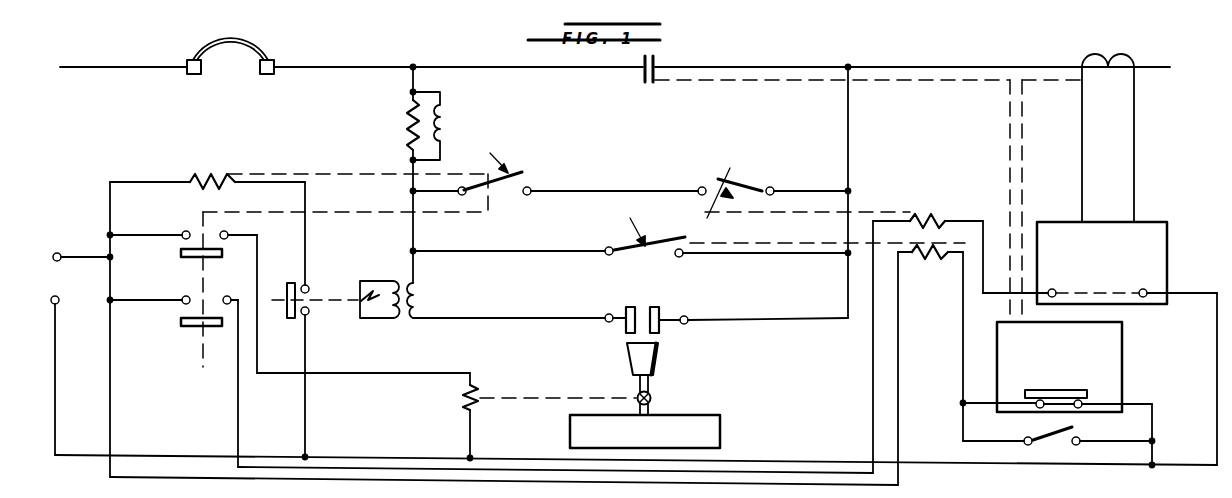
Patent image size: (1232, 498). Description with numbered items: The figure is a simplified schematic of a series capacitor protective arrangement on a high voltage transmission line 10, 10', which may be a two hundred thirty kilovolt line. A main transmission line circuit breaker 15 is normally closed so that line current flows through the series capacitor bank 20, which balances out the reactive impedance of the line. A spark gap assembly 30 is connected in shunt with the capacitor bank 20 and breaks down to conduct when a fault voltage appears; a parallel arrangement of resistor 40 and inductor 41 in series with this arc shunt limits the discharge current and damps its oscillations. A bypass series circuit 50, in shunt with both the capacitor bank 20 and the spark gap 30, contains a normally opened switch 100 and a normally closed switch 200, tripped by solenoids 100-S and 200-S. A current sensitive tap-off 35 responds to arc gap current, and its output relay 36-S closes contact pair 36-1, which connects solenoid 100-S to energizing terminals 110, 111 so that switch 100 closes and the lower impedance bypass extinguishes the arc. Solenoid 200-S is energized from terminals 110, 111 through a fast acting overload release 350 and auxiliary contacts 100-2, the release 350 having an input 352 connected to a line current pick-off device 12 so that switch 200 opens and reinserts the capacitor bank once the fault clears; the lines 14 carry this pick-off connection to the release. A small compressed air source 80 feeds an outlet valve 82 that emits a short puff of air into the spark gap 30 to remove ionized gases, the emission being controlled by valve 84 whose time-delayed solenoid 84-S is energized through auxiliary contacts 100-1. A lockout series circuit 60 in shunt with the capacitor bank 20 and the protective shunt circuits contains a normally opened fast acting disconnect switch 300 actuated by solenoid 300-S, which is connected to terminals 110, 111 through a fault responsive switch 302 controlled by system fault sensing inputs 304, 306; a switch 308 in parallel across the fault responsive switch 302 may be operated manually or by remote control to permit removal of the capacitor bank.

The transmission line 10 is at (351, 52).
The transmission line 10' is at (923, 55).
The line current pick-off device 12 is at (1081, 61).
The current transformer secondary leads 14 is at (1110, 138).
The main transmission line circuit breaker 15 is at (270, 52).
The series capacitor bank 20 is at (640, 78).
The spark gap assembly 30 is at (640, 306).
The current sensitive tap-off 35 is at (401, 279).
The contact pair 36-1 is at (311, 289).
The output relay 36-S is at (358, 314).
The resistor 40 is at (402, 130).
The inductor 41 is at (448, 130).
The bypass series circuit 50 is at (640, 189).
The lockout series circuit 60 is at (518, 250).
The compressed air source 80 is at (722, 434).
The outlet valve 82 is at (660, 362).
The valve 84 is at (652, 398).
The actuating solenoid 84-S is at (462, 408).
The normally opened switch 100 is at (508, 191).
The trip-coil solenoid 100-S is at (252, 162).
The auxiliary contacts 100-1 is at (196, 230).
The auxiliary contacts 100-2 is at (197, 295).
The terminal 110 is at (62, 248).
The terminal 111 is at (58, 296).
The normally closed switch 200 is at (774, 187).
The trip-coil solenoid 200-S is at (957, 198).
The fast acting disconnect switch 300 is at (648, 255).
The solenoid 300-S is at (536, 365).
The fault responsive switch 302 is at (1115, 382).
The system fault sensing input 304 is at (1027, 158).
The system fault sensing input 306 is at (1006, 128).
The switch 308 is at (1059, 448).
The fast acting overload release 350 is at (1162, 259).
The input 352 is at (1110, 213).